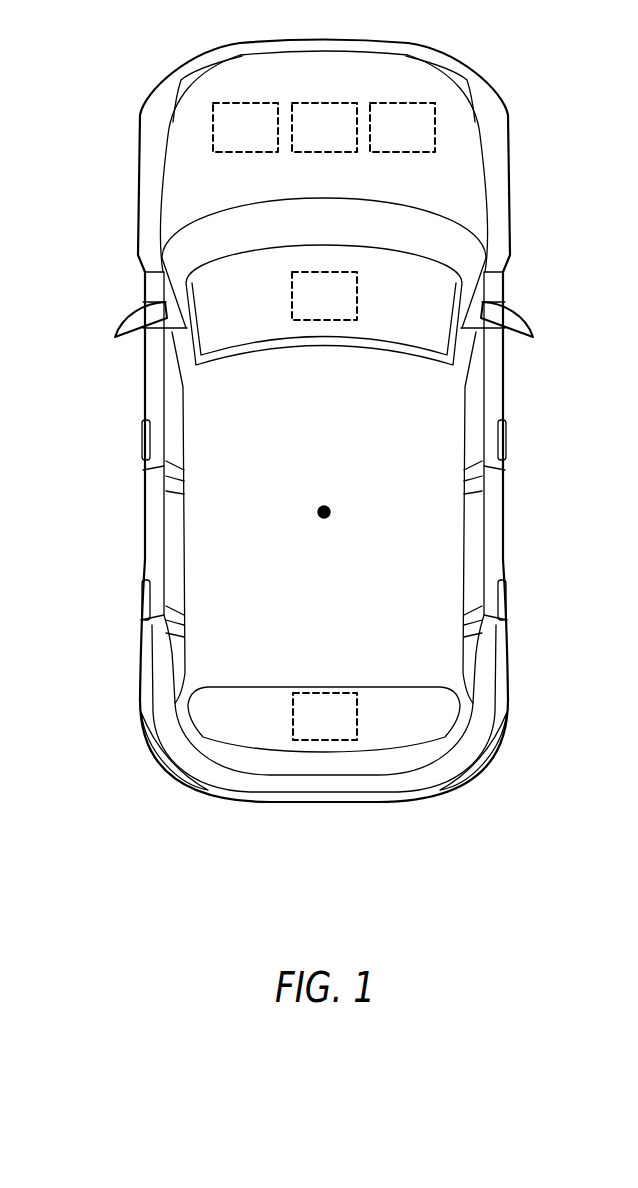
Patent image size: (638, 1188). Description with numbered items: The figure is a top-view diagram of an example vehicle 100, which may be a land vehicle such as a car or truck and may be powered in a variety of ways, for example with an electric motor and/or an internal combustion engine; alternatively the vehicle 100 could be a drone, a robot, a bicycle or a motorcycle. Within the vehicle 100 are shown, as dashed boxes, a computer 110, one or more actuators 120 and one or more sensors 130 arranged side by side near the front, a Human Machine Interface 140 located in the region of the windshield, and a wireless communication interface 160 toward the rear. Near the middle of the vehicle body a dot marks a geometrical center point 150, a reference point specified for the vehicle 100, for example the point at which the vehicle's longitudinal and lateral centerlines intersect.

The vehicle 100 is at (321, 612).
The computer 110 is at (239, 140).
The actuator 120 is at (318, 140).
The sensor 130 is at (396, 140).
The Human Machine Interface 140 is at (319, 308).
The geometrical center point 150 is at (318, 515).
The wireless communication interface 160 is at (318, 732).